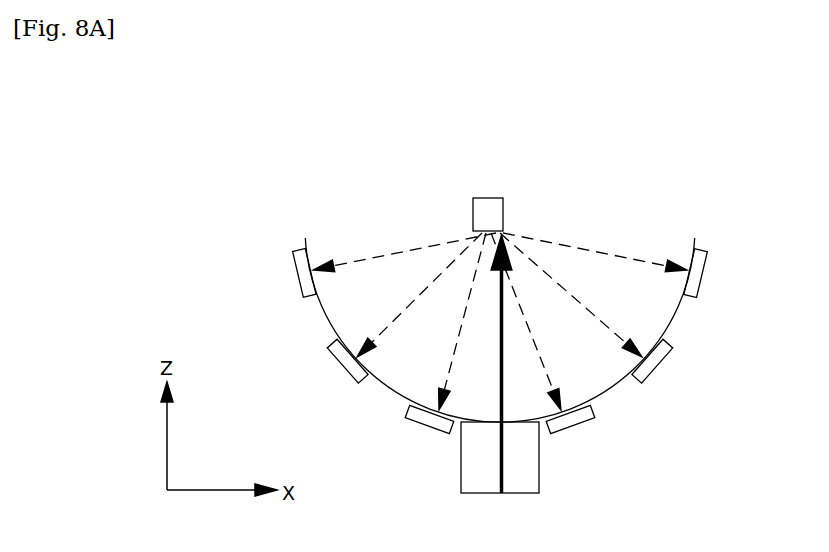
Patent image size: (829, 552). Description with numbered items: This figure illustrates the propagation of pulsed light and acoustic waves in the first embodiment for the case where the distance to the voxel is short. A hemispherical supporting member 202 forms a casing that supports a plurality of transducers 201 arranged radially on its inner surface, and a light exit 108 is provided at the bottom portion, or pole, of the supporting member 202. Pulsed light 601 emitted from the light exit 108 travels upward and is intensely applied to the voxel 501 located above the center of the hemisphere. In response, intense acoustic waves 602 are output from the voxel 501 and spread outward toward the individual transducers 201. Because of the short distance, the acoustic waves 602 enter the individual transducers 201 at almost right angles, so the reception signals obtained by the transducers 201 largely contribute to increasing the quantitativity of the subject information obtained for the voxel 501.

The voxel 501 is at (490, 198).
The acoustic waves 602 is at (574, 248).
The pulsed light 601 is at (503, 380).
The light exit 108 is at (540, 468).
The transducers 201 is at (663, 342).
The supporting member 202 is at (326, 318).